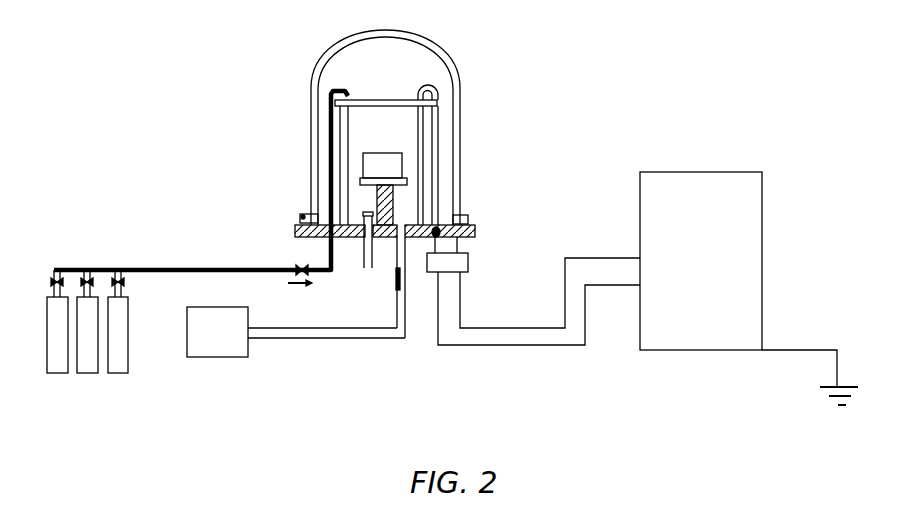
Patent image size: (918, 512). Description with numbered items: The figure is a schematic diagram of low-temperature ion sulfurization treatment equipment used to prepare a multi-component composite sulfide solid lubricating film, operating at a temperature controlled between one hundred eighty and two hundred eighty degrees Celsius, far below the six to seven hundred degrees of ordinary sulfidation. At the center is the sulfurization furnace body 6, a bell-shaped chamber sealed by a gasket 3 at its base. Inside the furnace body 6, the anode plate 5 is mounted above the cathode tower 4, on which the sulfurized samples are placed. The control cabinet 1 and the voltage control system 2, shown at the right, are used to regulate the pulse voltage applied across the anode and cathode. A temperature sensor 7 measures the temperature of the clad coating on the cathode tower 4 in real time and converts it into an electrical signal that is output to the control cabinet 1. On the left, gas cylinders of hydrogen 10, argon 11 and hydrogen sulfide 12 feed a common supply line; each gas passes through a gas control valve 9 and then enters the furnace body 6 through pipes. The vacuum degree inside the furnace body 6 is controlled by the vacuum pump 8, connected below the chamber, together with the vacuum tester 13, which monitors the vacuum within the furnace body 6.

The control cabinet 1 is at (738, 285).
The voltage control system 2 is at (448, 262).
The gasket 3 is at (300, 222).
The cathode tower 4 is at (406, 178).
The anode plate 5 is at (398, 100).
The furnace body 6 is at (451, 57).
The temperature sensor 7 is at (360, 157).
The vacuum pump 8 is at (208, 337).
The gas control valve 9 is at (55, 272).
The hydrogen 10 is at (57, 365).
The argon 11 is at (90, 365).
The hydrogen sulfide 12 is at (125, 365).
The vacuum tester 13 is at (365, 214).